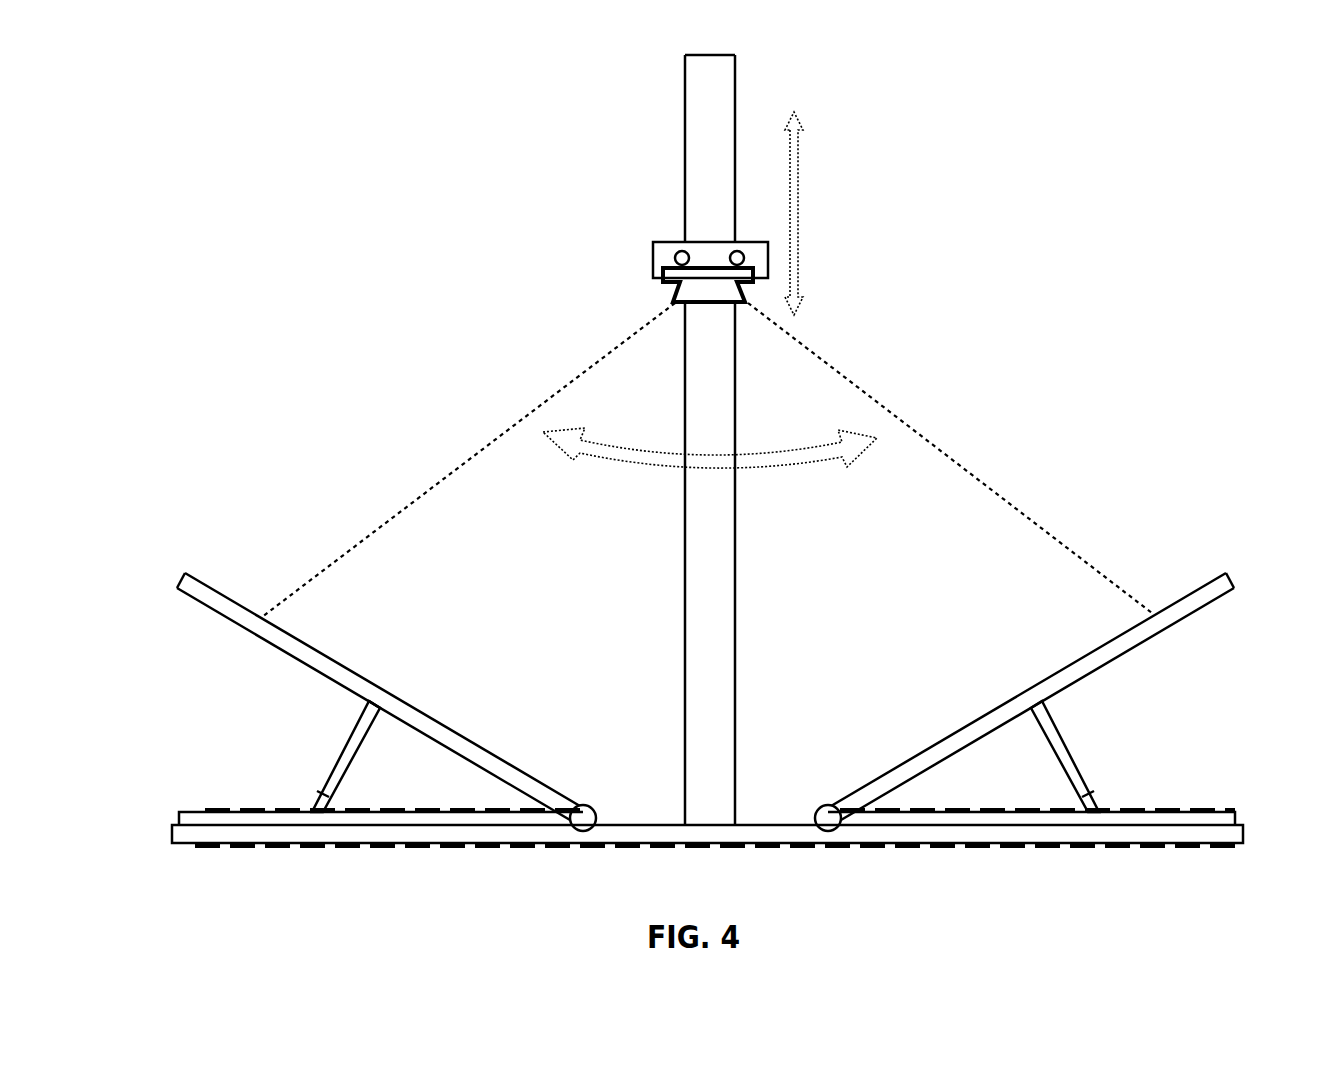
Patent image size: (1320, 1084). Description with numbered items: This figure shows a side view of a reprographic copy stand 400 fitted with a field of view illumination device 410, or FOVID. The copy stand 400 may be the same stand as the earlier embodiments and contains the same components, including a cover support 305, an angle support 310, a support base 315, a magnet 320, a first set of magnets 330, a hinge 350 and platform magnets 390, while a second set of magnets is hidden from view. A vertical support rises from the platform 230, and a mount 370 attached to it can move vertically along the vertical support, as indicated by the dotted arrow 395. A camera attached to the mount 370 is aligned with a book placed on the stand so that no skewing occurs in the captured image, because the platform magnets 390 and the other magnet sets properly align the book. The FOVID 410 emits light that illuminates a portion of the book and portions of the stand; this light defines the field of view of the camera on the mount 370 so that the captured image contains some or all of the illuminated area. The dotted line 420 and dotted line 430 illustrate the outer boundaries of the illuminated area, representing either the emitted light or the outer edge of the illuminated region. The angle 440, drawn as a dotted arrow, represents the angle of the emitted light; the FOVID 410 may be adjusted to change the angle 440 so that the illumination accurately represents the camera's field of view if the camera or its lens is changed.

The reprographic copy stand 400 is at (238, 224).
The mount 370 is at (668, 242).
The field of view illumination device 410 is at (664, 290).
The dotted arrow 395 is at (798, 214).
The dotted line 420 is at (476, 452).
The dotted line 430 is at (923, 438).
The angle 440 is at (778, 452).
The cover support 305 is at (365, 676).
The hinge 350 is at (593, 804).
The magnet 320 is at (343, 778).
The angle support 310 is at (363, 720).
The support base 315 is at (177, 811).
The first set of magnets 330 is at (257, 810).
The platform 230 is at (188, 848).
The platform magnets 390 is at (390, 847).